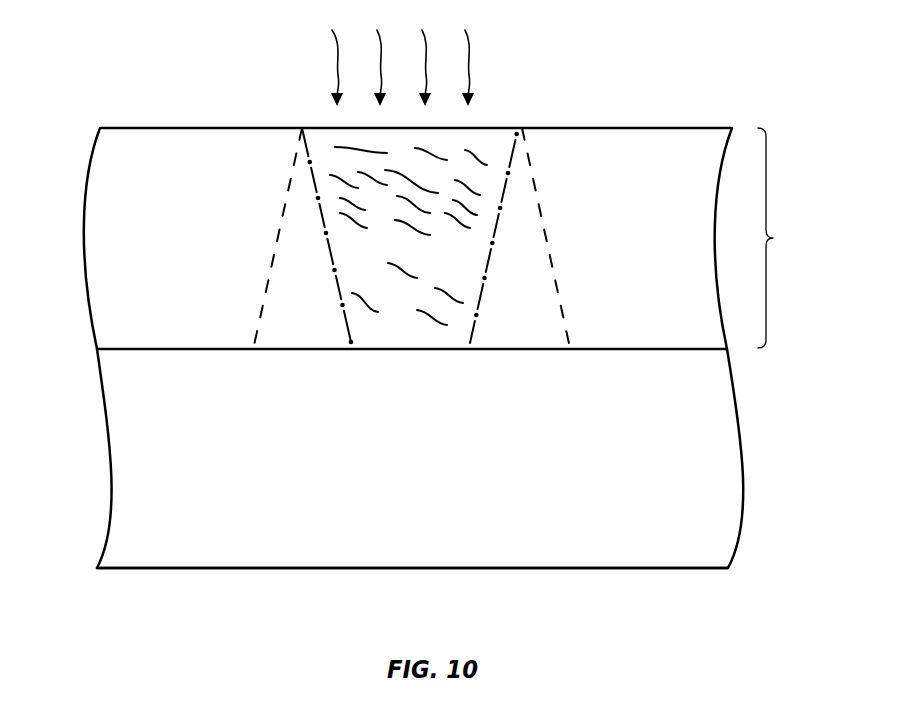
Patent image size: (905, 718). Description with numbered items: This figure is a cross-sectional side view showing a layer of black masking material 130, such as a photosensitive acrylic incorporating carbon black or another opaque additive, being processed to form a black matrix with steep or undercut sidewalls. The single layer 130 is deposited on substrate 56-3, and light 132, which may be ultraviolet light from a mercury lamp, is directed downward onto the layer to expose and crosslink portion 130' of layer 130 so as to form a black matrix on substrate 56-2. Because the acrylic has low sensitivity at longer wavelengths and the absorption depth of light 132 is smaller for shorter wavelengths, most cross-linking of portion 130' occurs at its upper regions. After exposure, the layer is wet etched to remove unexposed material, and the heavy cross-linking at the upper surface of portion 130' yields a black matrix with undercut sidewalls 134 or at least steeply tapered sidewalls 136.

The layer of black masking material 130 is at (380, 348).
The portion of layer 130' is at (433, 198).
The light 132 is at (333, 70).
The undercut sidewalls 134 is at (340, 293).
The steeply tapered sidewalls 136 is at (260, 313).
The substrate 56-2 is at (459, 238).
The substrate 56-3 is at (720, 440).